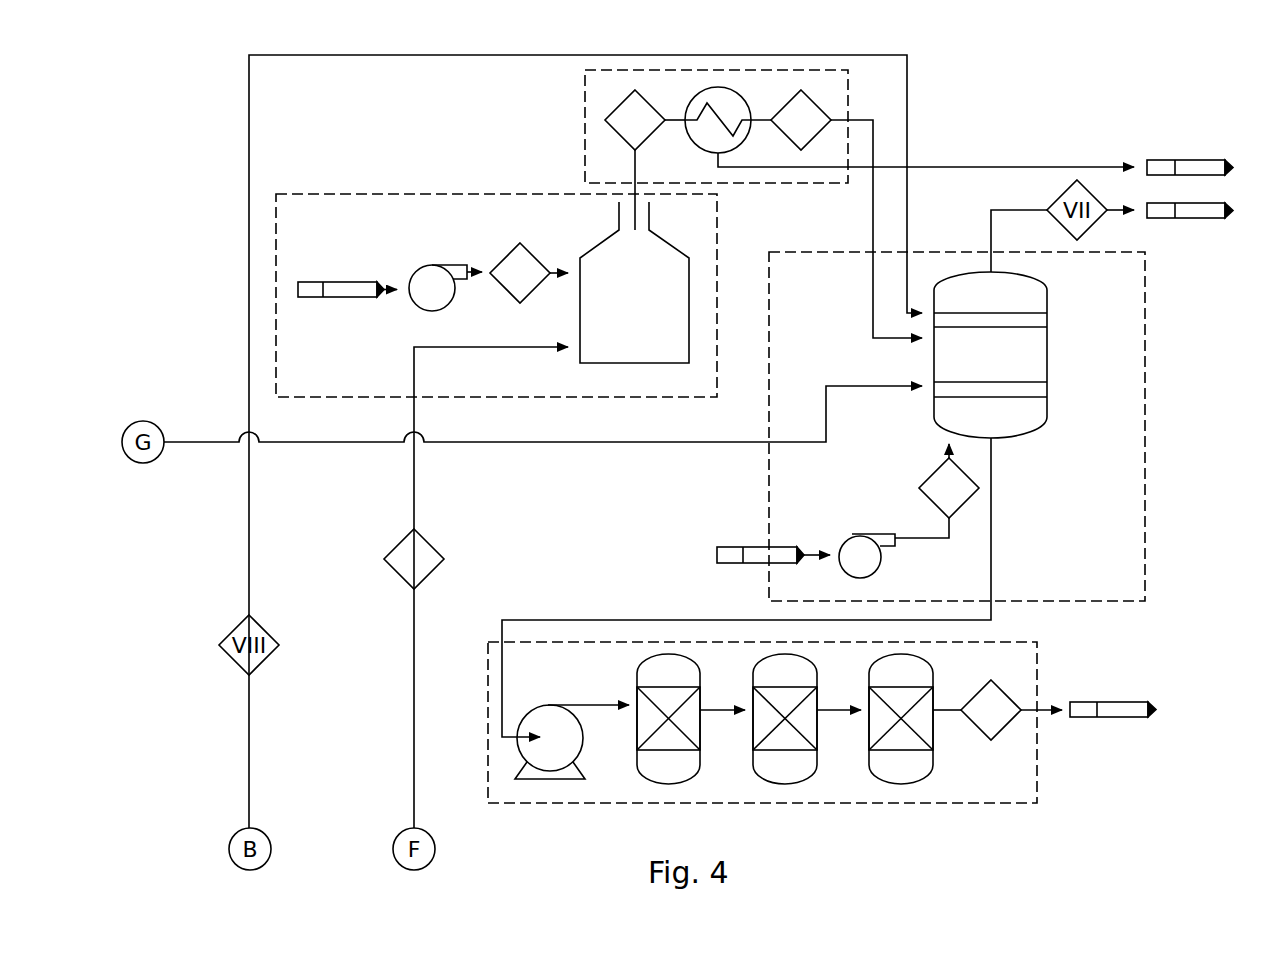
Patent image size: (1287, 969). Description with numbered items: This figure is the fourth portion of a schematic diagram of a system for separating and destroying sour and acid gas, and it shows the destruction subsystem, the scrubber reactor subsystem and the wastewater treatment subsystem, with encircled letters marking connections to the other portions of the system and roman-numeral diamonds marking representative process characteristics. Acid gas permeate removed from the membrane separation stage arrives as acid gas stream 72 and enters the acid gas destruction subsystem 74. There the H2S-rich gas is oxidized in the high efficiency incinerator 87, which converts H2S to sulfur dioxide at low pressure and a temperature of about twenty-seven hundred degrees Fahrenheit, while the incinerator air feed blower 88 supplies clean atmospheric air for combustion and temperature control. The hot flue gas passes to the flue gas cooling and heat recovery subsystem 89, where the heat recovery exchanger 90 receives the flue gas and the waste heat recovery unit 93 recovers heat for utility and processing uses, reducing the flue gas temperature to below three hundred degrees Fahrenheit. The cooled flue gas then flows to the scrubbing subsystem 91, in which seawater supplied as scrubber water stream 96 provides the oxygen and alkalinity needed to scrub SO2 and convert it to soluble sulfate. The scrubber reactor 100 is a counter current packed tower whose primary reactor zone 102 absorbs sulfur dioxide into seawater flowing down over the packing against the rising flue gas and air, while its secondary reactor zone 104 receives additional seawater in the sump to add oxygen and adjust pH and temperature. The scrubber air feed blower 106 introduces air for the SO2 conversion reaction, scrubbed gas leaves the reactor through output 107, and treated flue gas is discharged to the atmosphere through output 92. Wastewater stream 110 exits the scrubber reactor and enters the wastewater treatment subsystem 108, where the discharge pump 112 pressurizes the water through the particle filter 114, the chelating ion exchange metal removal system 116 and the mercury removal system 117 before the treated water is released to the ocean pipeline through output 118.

The acid gas stream 72 is at (414, 655).
The acid gas destruction subsystem 74 is at (276, 333).
The high efficiency incinerator 87 is at (621, 300).
The incinerator air feed blower 88 is at (419, 300).
The flue gas cooling and heat recovery subsystem 89 is at (585, 128).
The heat recovery exchanger 90 is at (692, 138).
The scrubbing subsystem 91 is at (1146, 320).
The output 92 is at (1183, 160).
The waste heat recovery unit 93 is at (744, 98).
The scrubber water stream 96 is at (190, 442).
The scrubber reactor 100 is at (1047, 296).
The primary reactor zone 102 is at (1058, 319).
The secondary reactor zone 104 is at (1058, 387).
The scrubber air feed blower 106 is at (842, 569).
The output 107 is at (1190, 219).
The wastewater treatment subsystem 108 is at (1037, 656).
The wastewater stream 110 is at (622, 620).
The discharge pump 112 is at (545, 705).
The particle filter 114 is at (652, 781).
The metal removal system 116 is at (769, 781).
The mercury removal system 117 is at (885, 781).
The output 118 is at (1120, 717).